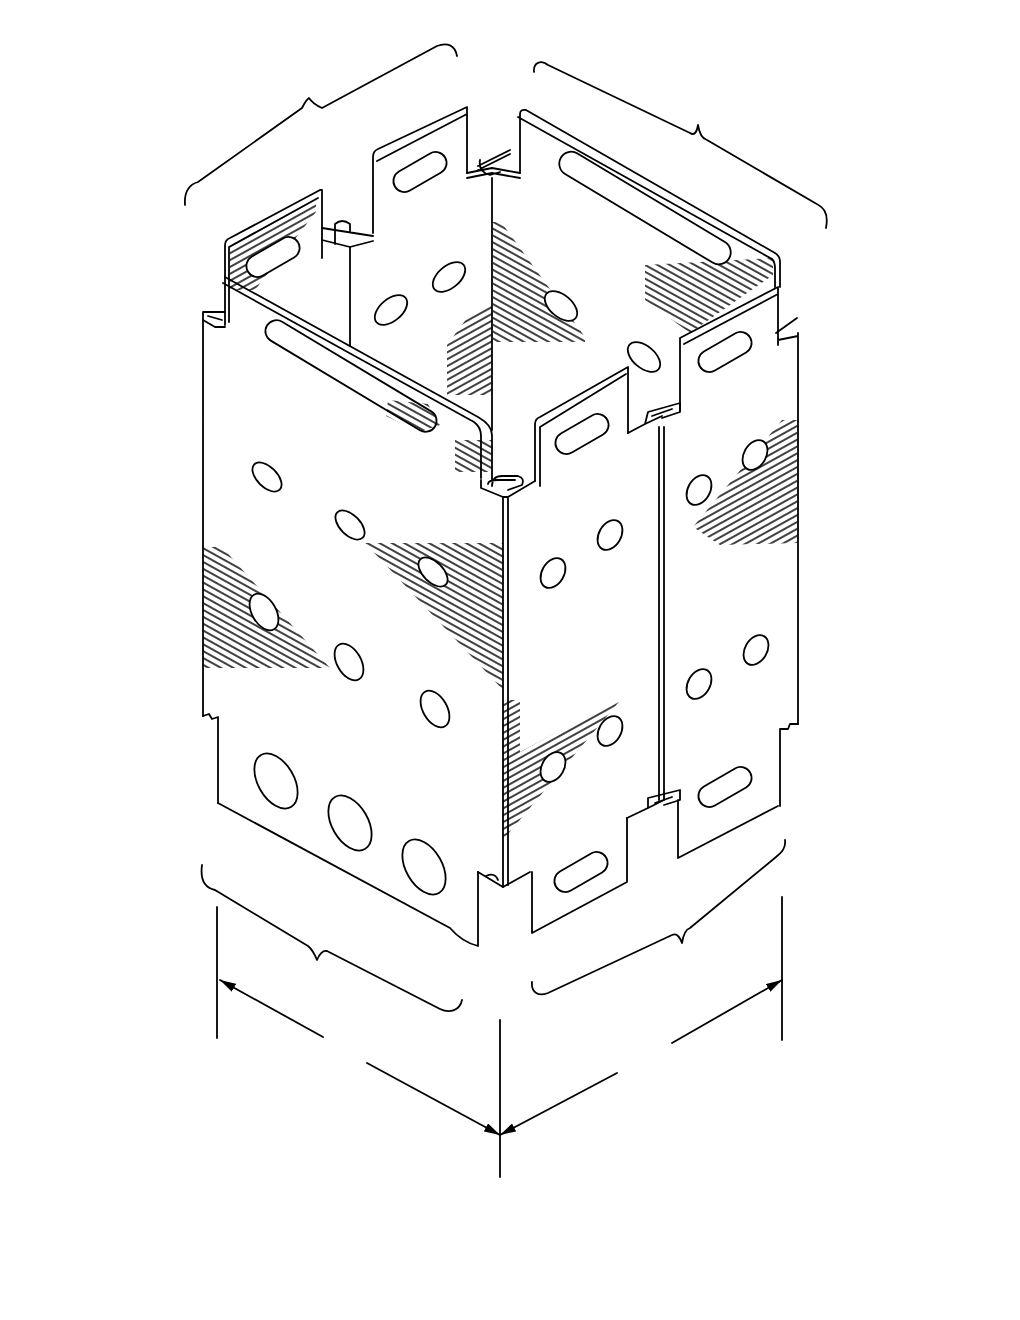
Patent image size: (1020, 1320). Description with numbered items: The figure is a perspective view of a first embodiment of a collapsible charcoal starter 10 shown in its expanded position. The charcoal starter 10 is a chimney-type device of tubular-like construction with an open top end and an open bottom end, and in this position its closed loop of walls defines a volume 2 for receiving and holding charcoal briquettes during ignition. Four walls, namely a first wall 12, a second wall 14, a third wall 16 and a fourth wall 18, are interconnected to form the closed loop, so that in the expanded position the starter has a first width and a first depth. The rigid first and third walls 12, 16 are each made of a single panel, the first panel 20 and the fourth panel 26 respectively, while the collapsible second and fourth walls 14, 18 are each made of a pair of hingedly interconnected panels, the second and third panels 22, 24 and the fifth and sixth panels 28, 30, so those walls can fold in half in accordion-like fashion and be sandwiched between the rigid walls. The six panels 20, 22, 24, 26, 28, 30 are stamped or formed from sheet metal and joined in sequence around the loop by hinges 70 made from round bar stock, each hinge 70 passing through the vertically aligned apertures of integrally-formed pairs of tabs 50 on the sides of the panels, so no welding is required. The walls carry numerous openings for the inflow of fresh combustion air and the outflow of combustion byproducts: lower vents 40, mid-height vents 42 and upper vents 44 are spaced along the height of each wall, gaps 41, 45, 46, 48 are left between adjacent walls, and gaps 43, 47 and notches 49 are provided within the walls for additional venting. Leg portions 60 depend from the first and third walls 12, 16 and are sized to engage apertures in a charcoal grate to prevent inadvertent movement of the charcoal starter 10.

The charcoal starter 10 is at (150, 138).
The volume 2 is at (602, 262).
The first wall 12 is at (332, 938).
The second wall 14 is at (658, 917).
The third wall 16 is at (680, 145).
The fourth wall 18 is at (321, 124).
The first panel 20 is at (362, 635).
The second panel 22 is at (598, 640).
The third panel 24 is at (740, 623).
The fourth panel 26 is at (577, 249).
The fifth panel 28 is at (457, 243).
The sixth panel 30 is at (332, 300).
The lower vent 40 is at (277, 752).
The gap 41 is at (198, 268).
The mid-height vent 42 is at (268, 488).
The gap 43 is at (338, 202).
The upper vent 44 is at (282, 346).
The gap 45 is at (498, 120).
The gap 46 is at (504, 905).
The gap 47 is at (647, 835).
The gap 48 is at (797, 752).
The notch 49 is at (298, 853).
The tab 50 is at (648, 428).
The leg portion 60 is at (215, 803).
The hinge 70 is at (495, 472).